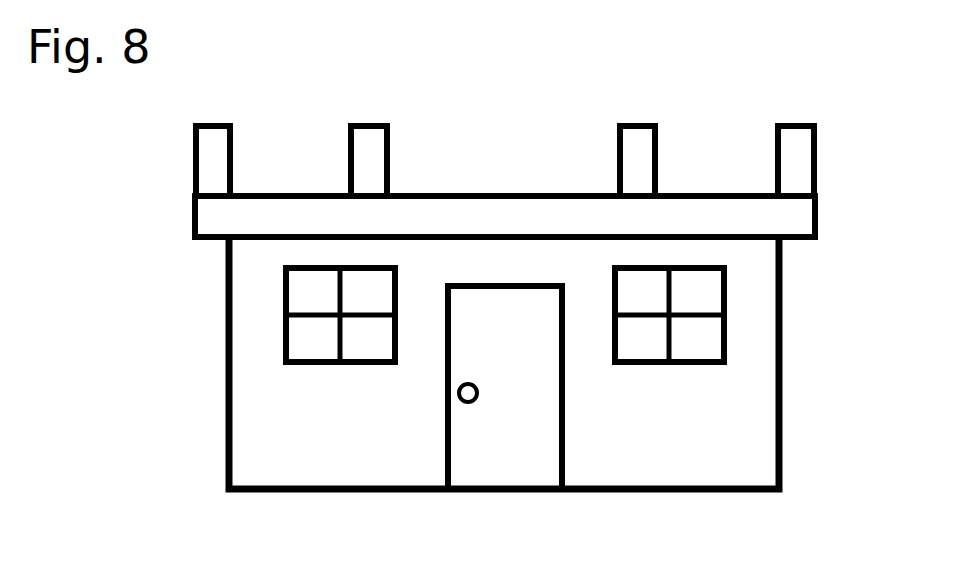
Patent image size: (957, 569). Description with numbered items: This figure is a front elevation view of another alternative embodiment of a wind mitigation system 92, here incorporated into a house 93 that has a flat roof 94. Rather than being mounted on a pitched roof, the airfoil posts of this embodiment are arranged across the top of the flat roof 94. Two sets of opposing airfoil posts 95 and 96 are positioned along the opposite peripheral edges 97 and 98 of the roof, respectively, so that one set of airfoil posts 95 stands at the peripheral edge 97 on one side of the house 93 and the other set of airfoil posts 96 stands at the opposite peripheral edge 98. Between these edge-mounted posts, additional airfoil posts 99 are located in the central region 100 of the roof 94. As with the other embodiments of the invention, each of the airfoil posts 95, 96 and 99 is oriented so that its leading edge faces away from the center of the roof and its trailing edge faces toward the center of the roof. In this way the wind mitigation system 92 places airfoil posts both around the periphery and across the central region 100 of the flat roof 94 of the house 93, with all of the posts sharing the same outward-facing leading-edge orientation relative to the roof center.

The wind mitigation system 92 is at (122, 318).
The house 93 is at (385, 398).
The flat roof 94 is at (519, 223).
The airfoil posts 95 is at (212, 163).
The airfoil posts 96 is at (797, 172).
The peripheral edge 97 is at (190, 217).
The peripheral edge 98 is at (819, 217).
The additional airfoil posts 99 is at (368, 150).
The central region 100 is at (572, 122).